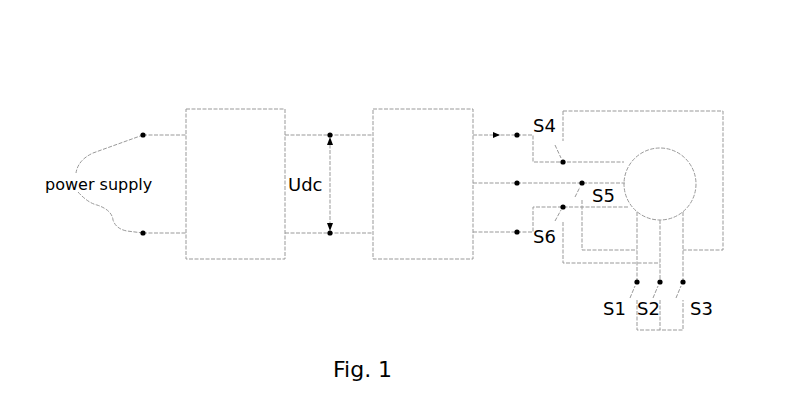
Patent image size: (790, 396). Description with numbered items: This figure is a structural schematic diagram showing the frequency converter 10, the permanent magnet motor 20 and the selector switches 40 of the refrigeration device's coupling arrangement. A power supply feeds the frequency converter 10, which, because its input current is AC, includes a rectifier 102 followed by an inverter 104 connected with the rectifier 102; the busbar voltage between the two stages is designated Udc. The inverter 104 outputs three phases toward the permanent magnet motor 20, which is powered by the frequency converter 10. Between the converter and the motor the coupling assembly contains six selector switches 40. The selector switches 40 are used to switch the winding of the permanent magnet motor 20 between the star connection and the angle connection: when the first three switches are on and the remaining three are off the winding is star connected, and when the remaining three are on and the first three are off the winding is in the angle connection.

The frequency converter 10 is at (329, 140).
The rectifier 102 is at (238, 119).
The inverter 104 is at (425, 118).
The permanent magnet motor 20 is at (654, 162).
The selector switch 40 is at (635, 282).